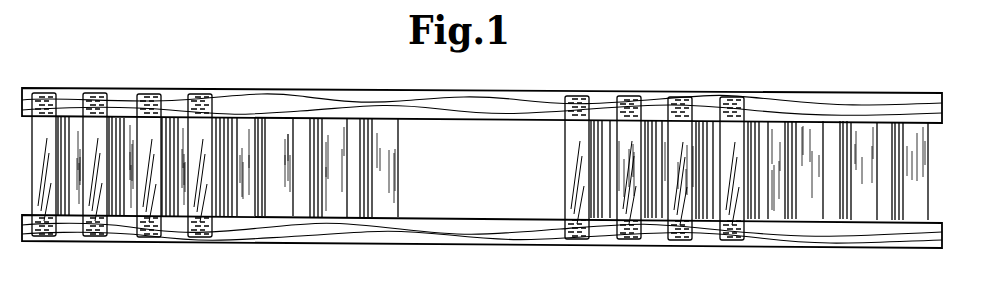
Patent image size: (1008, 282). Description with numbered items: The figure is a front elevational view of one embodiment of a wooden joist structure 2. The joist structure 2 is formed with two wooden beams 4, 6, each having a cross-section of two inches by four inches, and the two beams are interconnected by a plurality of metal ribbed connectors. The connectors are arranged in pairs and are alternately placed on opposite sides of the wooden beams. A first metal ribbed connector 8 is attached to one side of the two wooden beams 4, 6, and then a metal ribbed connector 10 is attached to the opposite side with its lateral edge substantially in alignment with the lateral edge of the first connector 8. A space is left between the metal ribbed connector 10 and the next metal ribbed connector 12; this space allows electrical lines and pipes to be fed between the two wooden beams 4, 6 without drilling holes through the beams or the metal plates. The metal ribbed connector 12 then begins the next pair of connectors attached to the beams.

The joist structure 2 is at (298, 245).
The wooden beam 4 is at (318, 89).
The wooden beam 6 is at (354, 243).
The first metal ribbed connector 8 is at (150, 94).
The metal ribbed connector 10 is at (400, 167).
The metal ribbed connector 12 is at (567, 96).